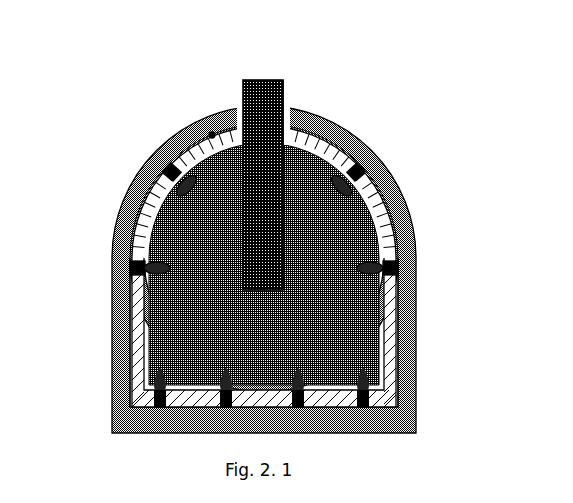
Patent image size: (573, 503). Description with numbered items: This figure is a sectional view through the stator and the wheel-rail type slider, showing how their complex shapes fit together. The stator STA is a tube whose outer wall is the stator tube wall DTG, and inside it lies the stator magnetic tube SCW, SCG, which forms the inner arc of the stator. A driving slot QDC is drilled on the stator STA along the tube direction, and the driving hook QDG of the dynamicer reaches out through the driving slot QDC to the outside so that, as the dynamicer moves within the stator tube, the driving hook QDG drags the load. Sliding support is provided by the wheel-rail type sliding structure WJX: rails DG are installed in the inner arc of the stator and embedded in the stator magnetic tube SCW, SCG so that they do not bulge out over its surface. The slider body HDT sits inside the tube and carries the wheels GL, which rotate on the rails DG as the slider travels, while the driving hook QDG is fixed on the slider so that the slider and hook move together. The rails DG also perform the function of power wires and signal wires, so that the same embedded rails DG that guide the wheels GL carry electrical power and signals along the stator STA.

The stator STA is at (209, 132).
The driving hook QDG is at (242, 103).
The driving slot QDC is at (287, 105).
The stator magnetic tube SCW is at (178, 136).
The stator magnetic tube SCG is at (249, 224).
The stator tube wall DTG is at (160, 139).
The rails DG is at (146, 162).
The wheels GL is at (174, 187).
The slider body HDT is at (215, 255).
The wheel-rail type sliding structure WJX is at (388, 176).